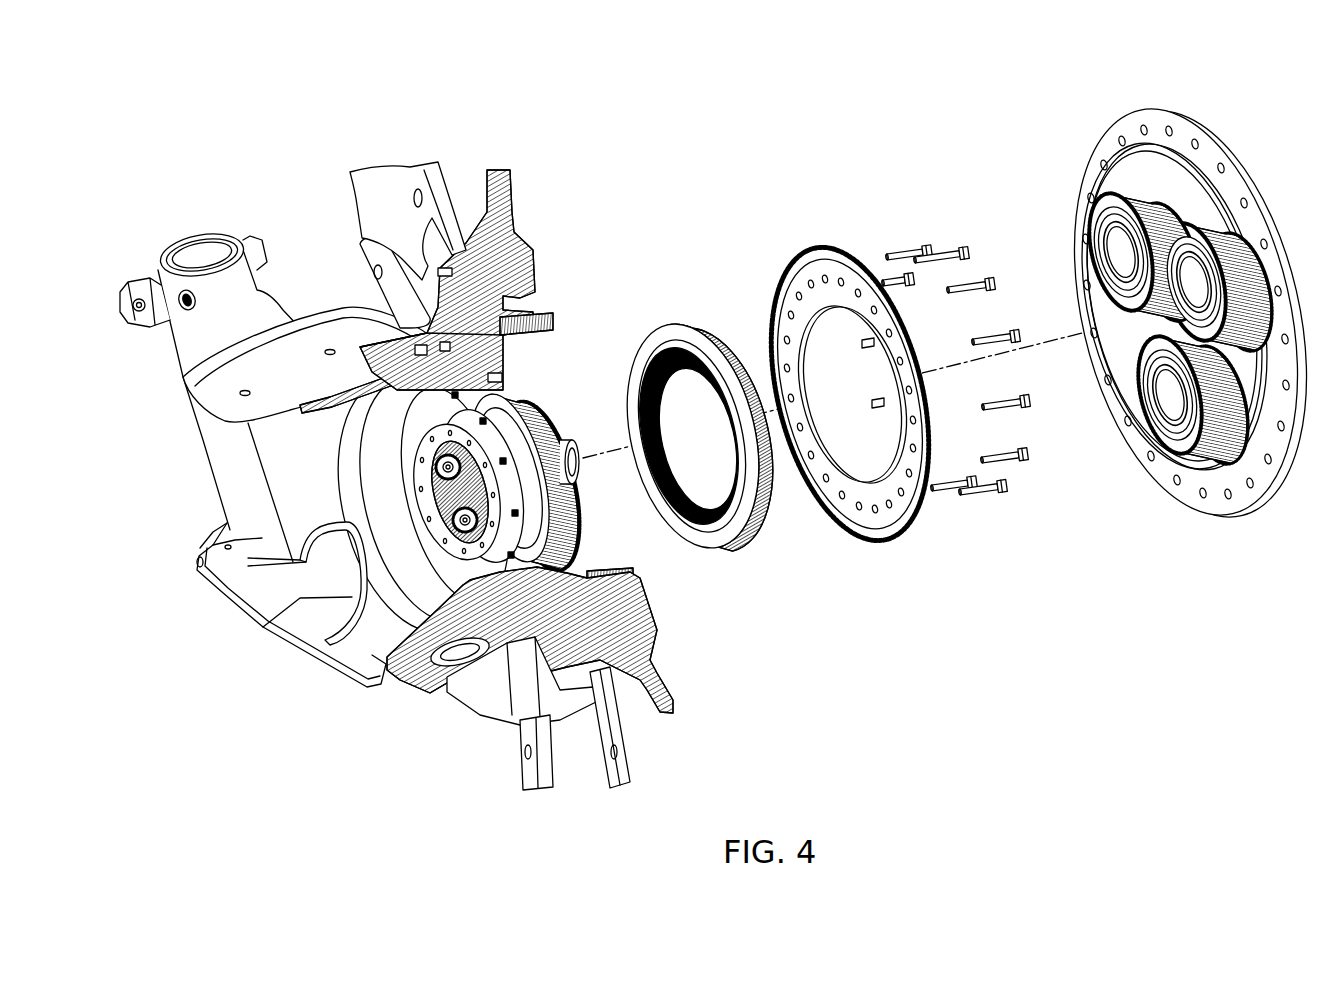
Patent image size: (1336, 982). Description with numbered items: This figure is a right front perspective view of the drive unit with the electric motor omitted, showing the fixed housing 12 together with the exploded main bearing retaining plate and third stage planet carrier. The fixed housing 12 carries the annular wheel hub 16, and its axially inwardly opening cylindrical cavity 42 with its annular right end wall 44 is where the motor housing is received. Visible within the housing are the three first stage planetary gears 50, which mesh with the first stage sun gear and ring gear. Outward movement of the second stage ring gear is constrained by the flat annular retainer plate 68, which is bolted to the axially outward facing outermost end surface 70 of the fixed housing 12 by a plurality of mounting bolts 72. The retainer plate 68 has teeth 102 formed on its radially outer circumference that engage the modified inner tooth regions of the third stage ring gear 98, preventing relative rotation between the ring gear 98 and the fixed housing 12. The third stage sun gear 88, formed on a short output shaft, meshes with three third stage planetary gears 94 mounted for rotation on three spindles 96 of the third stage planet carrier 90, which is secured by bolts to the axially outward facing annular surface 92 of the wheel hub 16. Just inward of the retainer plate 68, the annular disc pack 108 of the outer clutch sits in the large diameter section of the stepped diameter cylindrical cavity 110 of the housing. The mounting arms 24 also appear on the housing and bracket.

The fixed housing 12 is at (324, 457).
The annular wheel hub 16 is at (490, 738).
The mounting arm 24 is at (412, 182).
The cylindrical cavity 42 is at (383, 530).
The annular right end wall 44 is at (447, 565).
The first stage planetary gears 50 is at (460, 516).
The retainer plate 68 is at (820, 352).
The outermost end surface 70 is at (545, 560).
The mounting bolts 72 is at (955, 283).
The third stage sun gear 88 is at (574, 488).
The third stage planet carrier 90 is at (1210, 118).
The axially outward facing annular surface 92 is at (535, 270).
The third stage planetary gears 94 is at (1115, 210).
The spindles 96 is at (1118, 252).
The third stage ring gear 98 is at (553, 320).
The teeth 102 is at (896, 548).
The annular disc pack 108 is at (752, 545).
The stepped diameter cylindrical cavity 110 is at (505, 378).